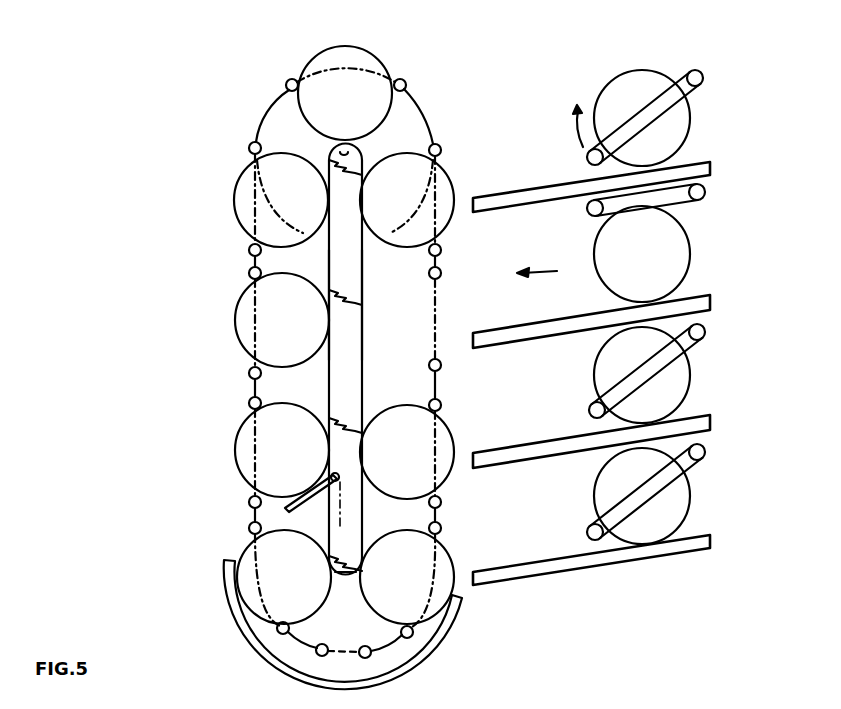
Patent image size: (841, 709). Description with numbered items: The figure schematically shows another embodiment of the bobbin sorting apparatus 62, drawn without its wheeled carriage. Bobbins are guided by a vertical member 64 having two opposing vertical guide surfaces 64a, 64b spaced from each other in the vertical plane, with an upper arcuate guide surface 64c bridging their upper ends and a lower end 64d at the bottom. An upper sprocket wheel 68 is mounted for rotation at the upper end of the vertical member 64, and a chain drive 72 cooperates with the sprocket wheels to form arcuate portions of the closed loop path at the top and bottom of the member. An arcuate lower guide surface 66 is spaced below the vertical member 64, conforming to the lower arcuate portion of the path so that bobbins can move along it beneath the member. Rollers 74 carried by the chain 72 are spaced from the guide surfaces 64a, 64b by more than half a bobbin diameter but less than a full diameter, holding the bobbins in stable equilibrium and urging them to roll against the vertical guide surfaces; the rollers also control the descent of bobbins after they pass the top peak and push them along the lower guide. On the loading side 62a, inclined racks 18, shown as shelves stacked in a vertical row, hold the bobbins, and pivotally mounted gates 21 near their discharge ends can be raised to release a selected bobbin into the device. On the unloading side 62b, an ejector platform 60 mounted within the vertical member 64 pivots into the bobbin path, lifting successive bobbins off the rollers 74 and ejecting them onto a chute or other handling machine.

The rack 18 is at (712, 168).
The gate 21 is at (692, 70).
The ejector platform 60 is at (258, 505).
The sorting apparatus embodiment 62 is at (615, 48).
The loading side 62a is at (728, 124).
The unloading side 62b is at (195, 163).
The vertical member 64 is at (355, 388).
The vertical guide surface 64a is at (386, 300).
The vertical guide surface 64b is at (329, 375).
The upper arcuate guide surface 64c is at (338, 149).
The lower end of vertical member 64d is at (346, 588).
The lower guide surface 66 is at (268, 653).
The upper sprocket wheel 68 is at (434, 121).
The chain drive 72 is at (441, 391).
The roller 74 is at (250, 404).